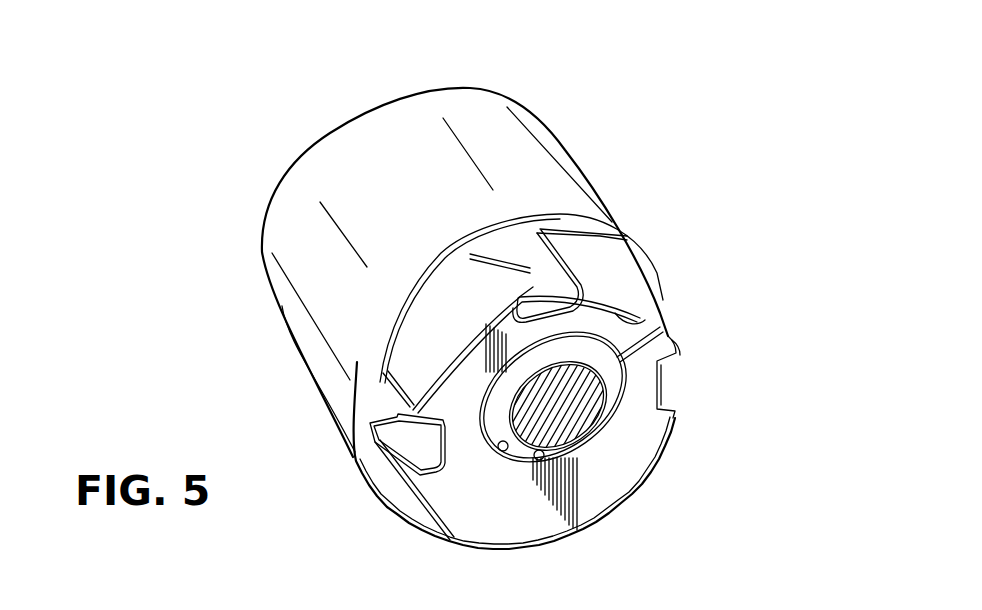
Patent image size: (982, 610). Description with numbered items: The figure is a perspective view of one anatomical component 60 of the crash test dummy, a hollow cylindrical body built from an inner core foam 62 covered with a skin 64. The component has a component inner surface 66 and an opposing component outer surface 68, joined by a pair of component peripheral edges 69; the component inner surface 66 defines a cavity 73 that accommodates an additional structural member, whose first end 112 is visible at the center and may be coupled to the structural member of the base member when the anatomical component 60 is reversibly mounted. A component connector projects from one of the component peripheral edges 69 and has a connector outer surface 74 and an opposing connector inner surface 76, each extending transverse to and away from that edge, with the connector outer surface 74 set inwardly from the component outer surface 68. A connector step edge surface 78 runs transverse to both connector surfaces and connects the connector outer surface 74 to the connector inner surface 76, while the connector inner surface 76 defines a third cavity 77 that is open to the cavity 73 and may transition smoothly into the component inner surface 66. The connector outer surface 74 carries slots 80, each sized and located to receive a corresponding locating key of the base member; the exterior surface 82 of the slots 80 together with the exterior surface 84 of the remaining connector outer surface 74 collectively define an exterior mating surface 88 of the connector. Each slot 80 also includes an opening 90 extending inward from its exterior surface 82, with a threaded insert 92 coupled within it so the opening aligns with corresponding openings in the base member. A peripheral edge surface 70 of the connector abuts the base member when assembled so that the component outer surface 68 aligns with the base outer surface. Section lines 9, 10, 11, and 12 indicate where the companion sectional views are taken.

The section line 9 is at (335, 132).
The section line 10 is at (307, 97).
The section line 11 is at (640, 290).
The section line 12 is at (660, 370).
The anatomical component 60 is at (699, 129).
The inner core foam 62 is at (300, 245).
The skin 64 is at (317, 370).
The component inner surface 66 is at (547, 457).
The component outer surface 68 is at (290, 227).
The component peripheral edge 69 is at (262, 267).
The peripheral edge surface 70 is at (647, 315).
The cavity 73 is at (427, 73).
The connector outer surface 74 is at (407, 322).
The connector inner surface 76 is at (298, 203).
The third cavity 77 is at (615, 540).
The connector step edge surface 78 is at (410, 361).
The slot 80 is at (534, 267).
The exterior surface of the slot 82 is at (552, 293).
The exterior surface of the outer connector surface 84 is at (440, 317).
The exterior mating surface 88 is at (753, 186).
The opening 90 is at (533, 287).
The threaded insert 92 is at (460, 310).
The first end 112 is at (670, 427).